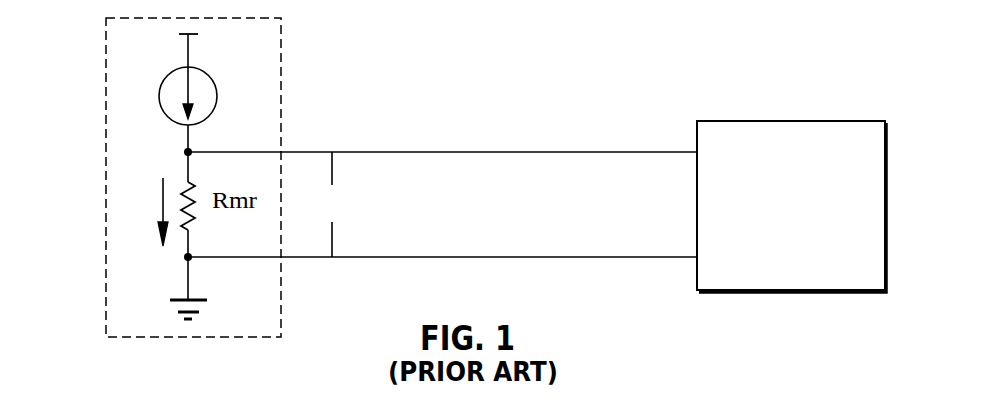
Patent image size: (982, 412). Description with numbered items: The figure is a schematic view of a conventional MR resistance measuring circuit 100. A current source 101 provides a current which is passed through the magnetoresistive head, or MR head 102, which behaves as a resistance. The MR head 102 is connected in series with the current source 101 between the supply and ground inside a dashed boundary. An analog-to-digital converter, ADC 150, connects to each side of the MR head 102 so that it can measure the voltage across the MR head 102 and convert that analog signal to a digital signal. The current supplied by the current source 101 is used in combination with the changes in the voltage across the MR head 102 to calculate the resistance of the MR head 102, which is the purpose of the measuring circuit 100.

The MR resistance measuring circuit 100 is at (517, 101).
The current source 101 is at (161, 87).
The MR head 102 is at (163, 210).
The ADC 150 is at (793, 121).